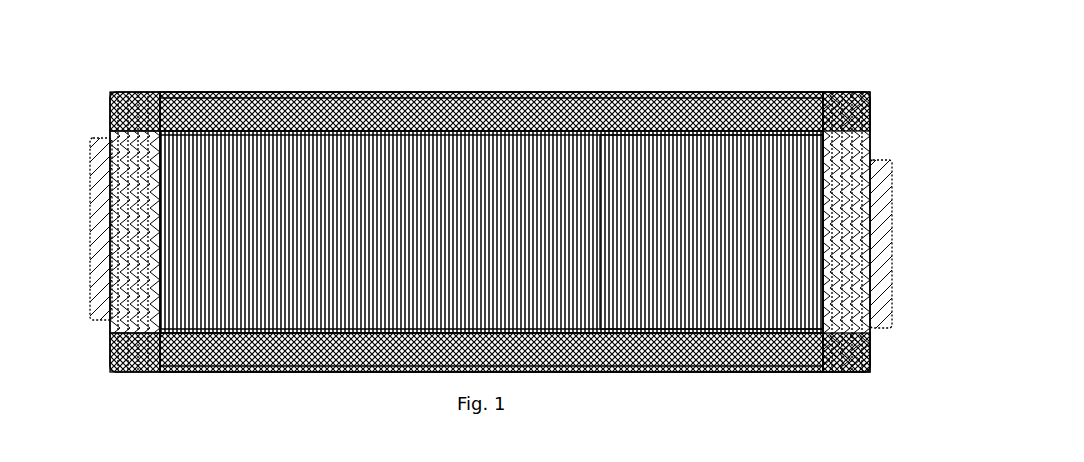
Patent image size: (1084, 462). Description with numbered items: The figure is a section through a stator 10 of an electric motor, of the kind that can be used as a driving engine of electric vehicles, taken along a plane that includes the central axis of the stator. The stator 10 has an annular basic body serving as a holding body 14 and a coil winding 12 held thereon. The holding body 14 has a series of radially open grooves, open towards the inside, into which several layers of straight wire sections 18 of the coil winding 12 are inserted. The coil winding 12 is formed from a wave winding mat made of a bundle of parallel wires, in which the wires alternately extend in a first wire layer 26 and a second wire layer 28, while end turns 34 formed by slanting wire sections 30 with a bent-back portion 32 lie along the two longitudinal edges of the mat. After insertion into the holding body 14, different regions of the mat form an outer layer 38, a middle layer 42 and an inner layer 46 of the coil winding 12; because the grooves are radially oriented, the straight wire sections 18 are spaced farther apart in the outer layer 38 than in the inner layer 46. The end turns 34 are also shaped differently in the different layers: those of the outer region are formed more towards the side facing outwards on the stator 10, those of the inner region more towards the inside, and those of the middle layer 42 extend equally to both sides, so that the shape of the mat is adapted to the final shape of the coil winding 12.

The stator 10 is at (723, 398).
The coil winding 12 is at (750, 150).
The holding body 14 is at (95, 205).
The straight wire sections 18 is at (780, 268).
The first wire layer 26 is at (873, 145).
The second wire layer 28 is at (880, 162).
The slanting wire sections 30 is at (510, 100).
The bent-back portion 32 is at (447, 90).
The end turns 34 is at (398, 90).
The outer layer 38 is at (115, 93).
The middle layer 42 is at (135, 93).
The inner layer 46 is at (150, 93).